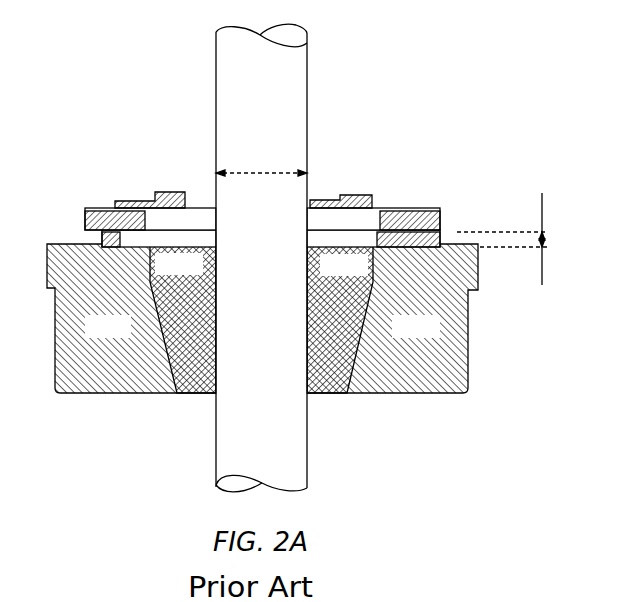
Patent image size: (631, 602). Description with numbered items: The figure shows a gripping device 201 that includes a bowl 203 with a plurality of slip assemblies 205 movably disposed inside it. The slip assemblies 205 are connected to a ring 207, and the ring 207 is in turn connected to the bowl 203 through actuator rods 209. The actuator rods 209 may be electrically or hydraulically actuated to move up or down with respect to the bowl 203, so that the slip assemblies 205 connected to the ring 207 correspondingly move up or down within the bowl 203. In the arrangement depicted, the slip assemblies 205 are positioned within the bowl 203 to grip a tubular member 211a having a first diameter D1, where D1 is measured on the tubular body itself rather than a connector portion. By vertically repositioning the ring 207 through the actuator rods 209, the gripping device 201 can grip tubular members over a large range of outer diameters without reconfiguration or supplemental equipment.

The gripping device 201 is at (297, 246).
The bowl 203 is at (262, 318).
The slip assemblies 205 is at (261, 313).
The ring 207 is at (430, 206).
The actuator rods 209 is at (442, 231).
The tubular member 211a is at (310, 118).
The first diameter D1 is at (243, 170).